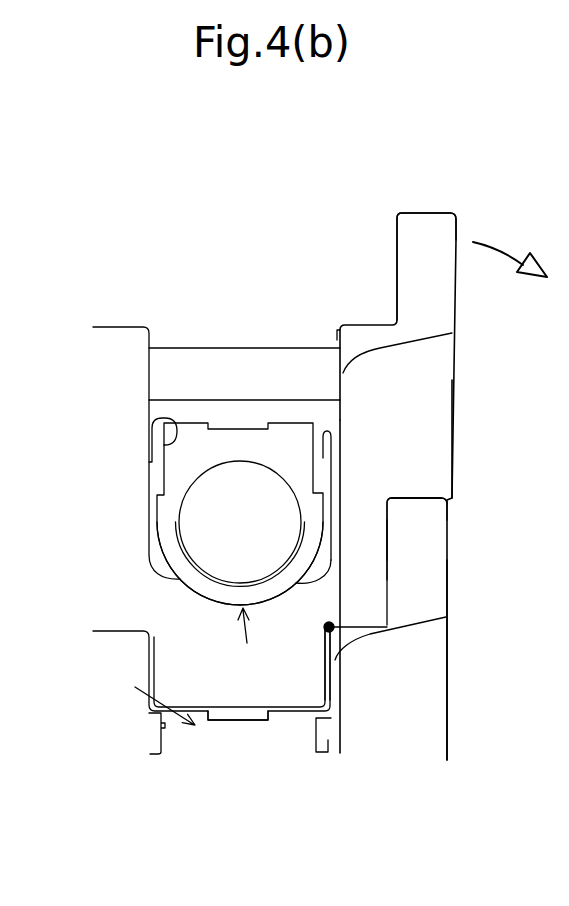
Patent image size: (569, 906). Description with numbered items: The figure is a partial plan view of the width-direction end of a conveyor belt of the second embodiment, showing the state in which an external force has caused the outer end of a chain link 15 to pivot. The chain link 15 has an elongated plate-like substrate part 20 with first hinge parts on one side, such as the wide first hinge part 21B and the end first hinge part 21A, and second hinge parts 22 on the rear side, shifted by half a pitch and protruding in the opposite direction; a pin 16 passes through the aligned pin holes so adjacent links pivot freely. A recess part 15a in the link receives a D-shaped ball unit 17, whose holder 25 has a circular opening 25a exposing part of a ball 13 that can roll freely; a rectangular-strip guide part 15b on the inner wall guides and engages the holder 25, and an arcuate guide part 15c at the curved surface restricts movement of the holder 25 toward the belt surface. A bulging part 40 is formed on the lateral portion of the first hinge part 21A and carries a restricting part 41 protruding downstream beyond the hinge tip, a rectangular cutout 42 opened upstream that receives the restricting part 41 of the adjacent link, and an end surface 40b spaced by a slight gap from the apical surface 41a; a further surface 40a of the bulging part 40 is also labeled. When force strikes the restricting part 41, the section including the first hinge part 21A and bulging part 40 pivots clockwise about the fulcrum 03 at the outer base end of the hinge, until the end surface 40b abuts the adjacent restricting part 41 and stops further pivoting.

The ball 13 is at (203, 517).
The chain link 15 is at (466, 410).
The recess part 15a is at (195, 583).
The guide part 15b is at (150, 420).
The guide part 15c is at (280, 593).
The pin 16 is at (233, 360).
The ball unit 17 is at (181, 666).
The substrate part 20 is at (322, 673).
The first hinge part 21A is at (353, 335).
The first hinge part 21B is at (118, 343).
The second hinge part 22 is at (282, 703).
The holder 25 is at (180, 470).
The circular opening 25a is at (192, 545).
The bulging part 40 is at (430, 365).
The cover side surface 40a is at (437, 448).
The end surface 40b is at (400, 500).
The restricting part 41 is at (422, 220).
The apical surface 41a is at (425, 497).
The rectangular cutout 42 is at (388, 530).
The fulcrum 03 is at (333, 632).